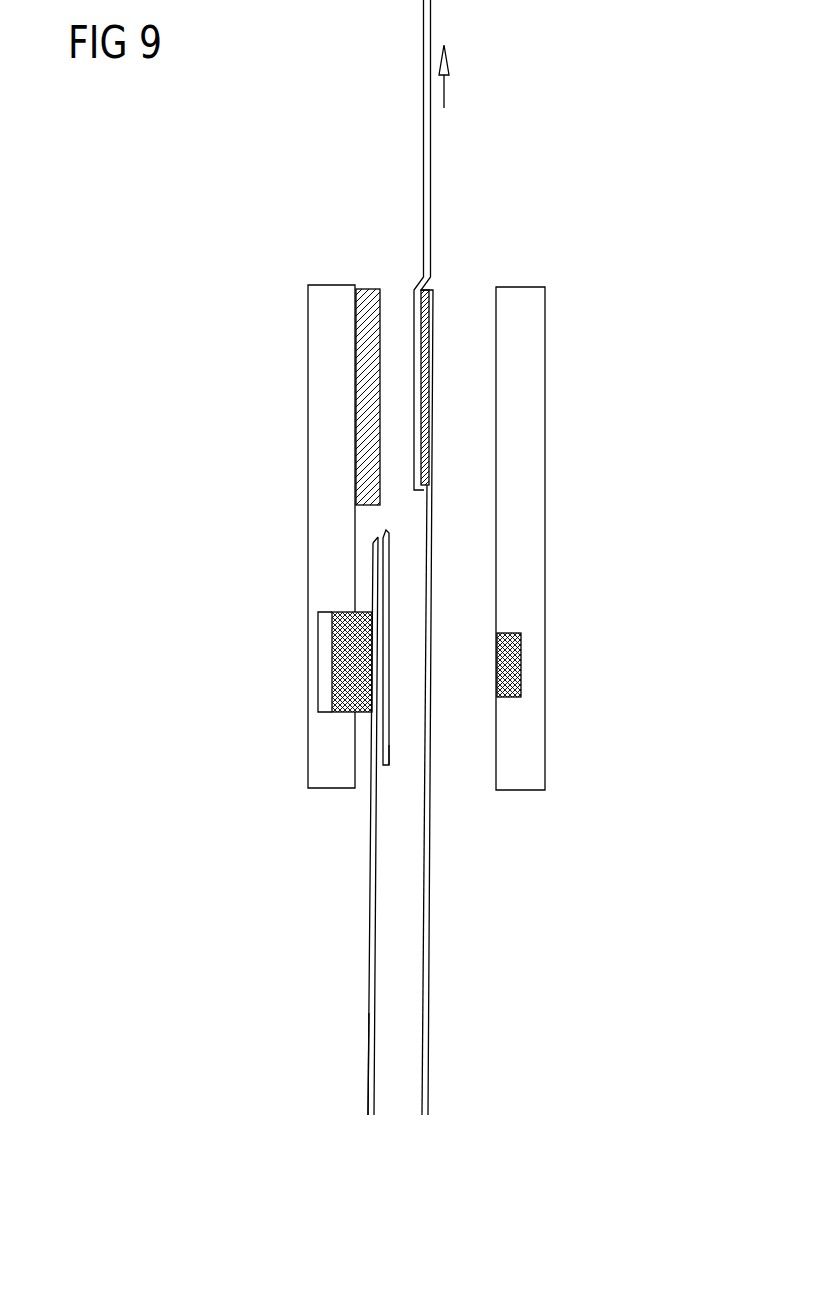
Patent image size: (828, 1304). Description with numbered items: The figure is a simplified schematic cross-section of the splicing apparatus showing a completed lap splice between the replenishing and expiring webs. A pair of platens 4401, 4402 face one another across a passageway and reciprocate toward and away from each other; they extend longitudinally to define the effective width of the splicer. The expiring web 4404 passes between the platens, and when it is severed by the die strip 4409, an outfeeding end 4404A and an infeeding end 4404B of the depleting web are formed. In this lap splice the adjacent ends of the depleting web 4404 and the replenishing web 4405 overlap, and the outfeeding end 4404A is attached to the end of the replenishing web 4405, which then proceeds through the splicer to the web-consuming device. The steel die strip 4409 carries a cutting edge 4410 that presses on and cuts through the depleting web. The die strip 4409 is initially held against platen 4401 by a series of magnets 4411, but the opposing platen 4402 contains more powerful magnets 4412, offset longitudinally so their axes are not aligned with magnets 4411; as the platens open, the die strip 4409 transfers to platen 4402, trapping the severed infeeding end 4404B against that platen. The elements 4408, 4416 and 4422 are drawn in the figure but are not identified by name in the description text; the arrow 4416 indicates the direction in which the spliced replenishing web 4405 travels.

The platen 4401 is at (545, 765).
The platen 4402 is at (306, 767).
The expiring web 4404 is at (369, 911).
The outfeeding end 4404A is at (413, 333).
The infeeding end 4404B is at (369, 1013).
The replenishing web 4405 is at (431, 966).
The hatched spacer 4408 is at (368, 289).
The die strip 4409 is at (389, 744).
The cutting edge 4410 is at (384, 532).
The magnets 4411 is at (522, 660).
The magnets 4412 is at (332, 655).
The direction arrow 4416 is at (444, 92).
The hatched insert 4422 is at (433, 313).